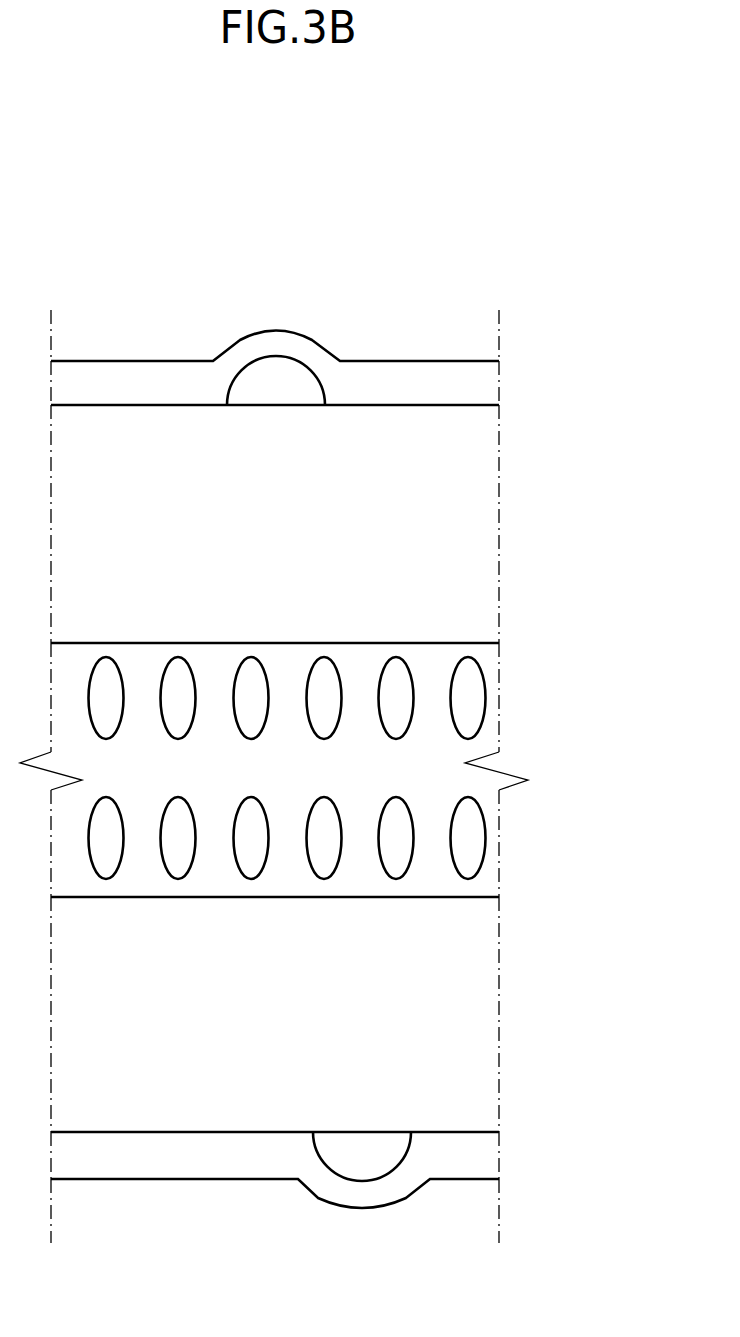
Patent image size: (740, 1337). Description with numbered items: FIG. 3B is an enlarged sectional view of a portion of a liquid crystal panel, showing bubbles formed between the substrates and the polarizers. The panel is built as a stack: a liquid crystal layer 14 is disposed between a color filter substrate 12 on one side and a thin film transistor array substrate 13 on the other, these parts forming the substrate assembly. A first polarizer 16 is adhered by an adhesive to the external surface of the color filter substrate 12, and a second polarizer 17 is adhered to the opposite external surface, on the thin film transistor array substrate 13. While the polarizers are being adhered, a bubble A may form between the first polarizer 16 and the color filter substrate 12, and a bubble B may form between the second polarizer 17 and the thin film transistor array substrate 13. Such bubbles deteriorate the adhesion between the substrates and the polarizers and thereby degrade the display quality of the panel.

The color filter substrate 12 is at (473, 525).
The thin film transistor array substrate 13 is at (473, 1010).
The liquid crystal layer 14 is at (473, 702).
The first polarizer 16 is at (338, 308).
The second polarizer 17 is at (338, 1213).
The bubble A is at (291, 386).
The bubble B is at (368, 1161).